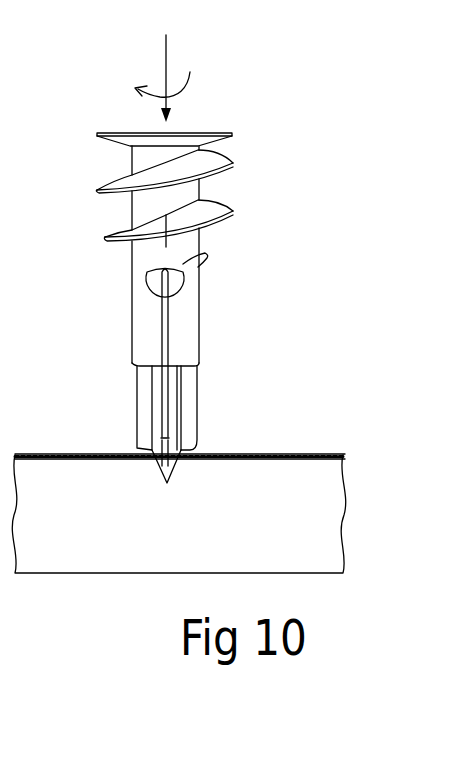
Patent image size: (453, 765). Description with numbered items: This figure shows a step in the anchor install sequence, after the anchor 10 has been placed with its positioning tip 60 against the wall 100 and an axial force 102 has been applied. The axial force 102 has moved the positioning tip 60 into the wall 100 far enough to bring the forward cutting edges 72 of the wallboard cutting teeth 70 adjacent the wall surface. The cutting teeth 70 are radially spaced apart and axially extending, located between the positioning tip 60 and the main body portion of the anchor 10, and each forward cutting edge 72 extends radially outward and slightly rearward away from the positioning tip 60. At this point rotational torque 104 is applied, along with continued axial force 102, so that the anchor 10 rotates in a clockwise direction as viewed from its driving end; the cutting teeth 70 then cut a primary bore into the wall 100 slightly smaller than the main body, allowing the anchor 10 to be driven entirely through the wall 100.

The anchor 10 is at (216, 315).
The positioning tip 60 is at (170, 470).
The wallboard cutting teeth 70 is at (198, 408).
The forward cutting edge 72 is at (190, 446).
The wall 100 is at (70, 555).
The axial force 102 is at (175, 47).
The rotational torque 104 is at (183, 88).